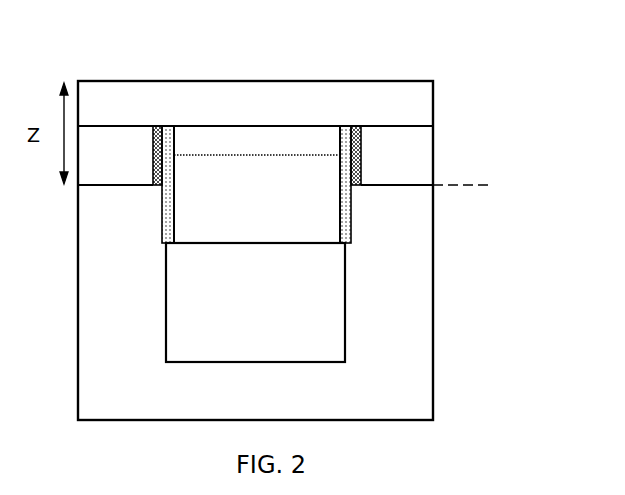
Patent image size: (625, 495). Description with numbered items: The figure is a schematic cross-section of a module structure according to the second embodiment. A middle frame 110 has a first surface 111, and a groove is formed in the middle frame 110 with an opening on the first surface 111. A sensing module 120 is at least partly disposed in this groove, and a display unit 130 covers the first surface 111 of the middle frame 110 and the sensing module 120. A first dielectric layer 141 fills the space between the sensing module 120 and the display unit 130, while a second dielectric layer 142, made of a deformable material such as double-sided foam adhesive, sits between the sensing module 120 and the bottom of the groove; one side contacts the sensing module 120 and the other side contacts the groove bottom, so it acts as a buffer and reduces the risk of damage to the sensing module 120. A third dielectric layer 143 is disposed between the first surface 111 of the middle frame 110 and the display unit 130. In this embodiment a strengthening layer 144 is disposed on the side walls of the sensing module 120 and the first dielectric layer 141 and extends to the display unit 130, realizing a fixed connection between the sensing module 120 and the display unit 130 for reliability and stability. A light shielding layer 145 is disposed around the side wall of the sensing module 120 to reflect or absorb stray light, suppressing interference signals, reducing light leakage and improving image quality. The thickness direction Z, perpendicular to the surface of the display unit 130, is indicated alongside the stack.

The middle frame 110 is at (433, 272).
The first surface 111 is at (460, 184).
The sensing module 120 is at (257, 184).
The display unit 130 is at (255, 110).
The first dielectric layer 141 is at (257, 142).
The second dielectric layer 142 is at (255, 302).
The third dielectric layer 143 is at (255, 165).
The strengthening layer 144 is at (168, 180).
The light shielding layer 145 is at (152, 127).